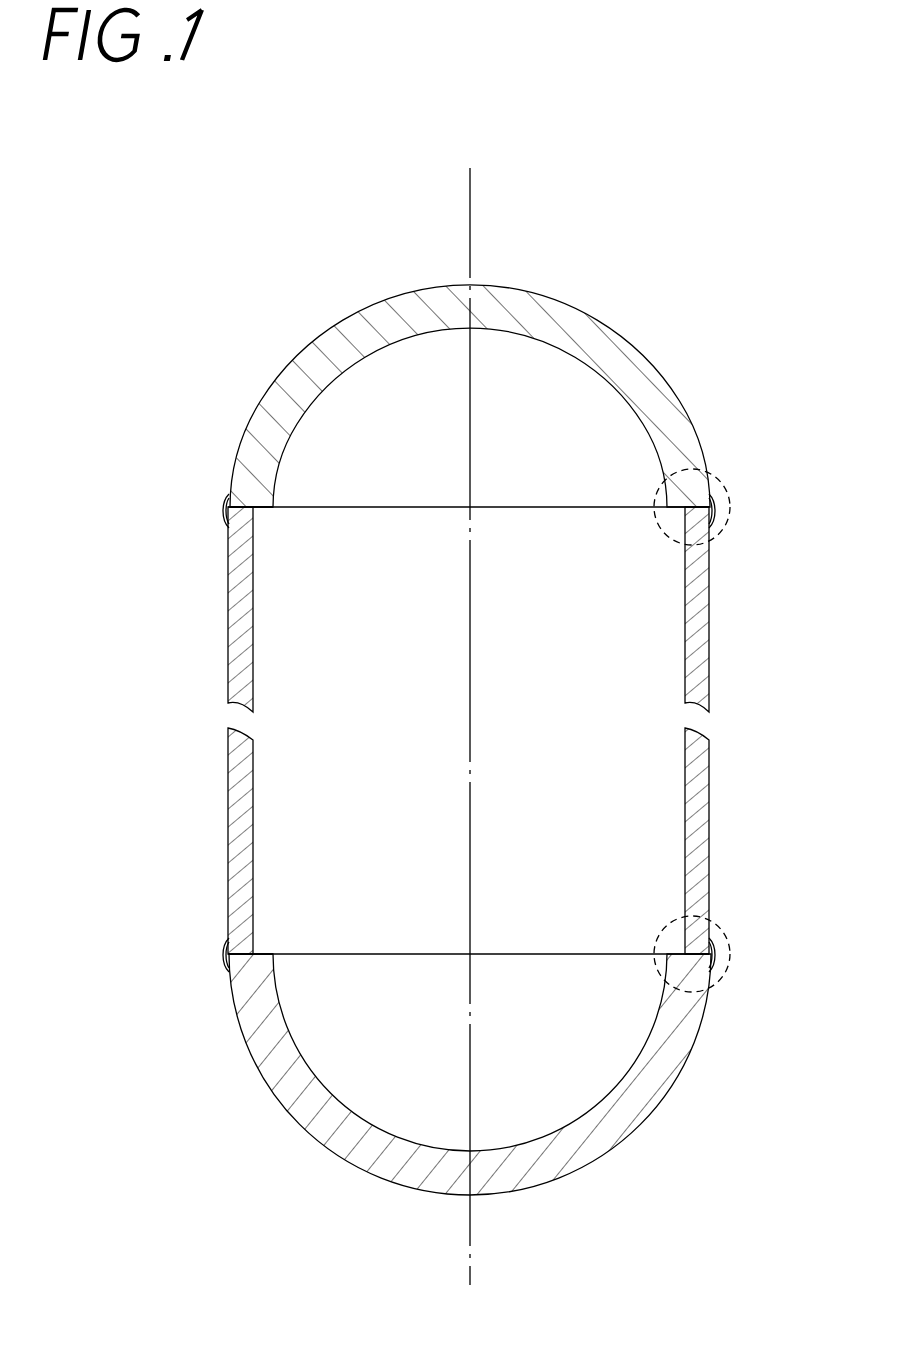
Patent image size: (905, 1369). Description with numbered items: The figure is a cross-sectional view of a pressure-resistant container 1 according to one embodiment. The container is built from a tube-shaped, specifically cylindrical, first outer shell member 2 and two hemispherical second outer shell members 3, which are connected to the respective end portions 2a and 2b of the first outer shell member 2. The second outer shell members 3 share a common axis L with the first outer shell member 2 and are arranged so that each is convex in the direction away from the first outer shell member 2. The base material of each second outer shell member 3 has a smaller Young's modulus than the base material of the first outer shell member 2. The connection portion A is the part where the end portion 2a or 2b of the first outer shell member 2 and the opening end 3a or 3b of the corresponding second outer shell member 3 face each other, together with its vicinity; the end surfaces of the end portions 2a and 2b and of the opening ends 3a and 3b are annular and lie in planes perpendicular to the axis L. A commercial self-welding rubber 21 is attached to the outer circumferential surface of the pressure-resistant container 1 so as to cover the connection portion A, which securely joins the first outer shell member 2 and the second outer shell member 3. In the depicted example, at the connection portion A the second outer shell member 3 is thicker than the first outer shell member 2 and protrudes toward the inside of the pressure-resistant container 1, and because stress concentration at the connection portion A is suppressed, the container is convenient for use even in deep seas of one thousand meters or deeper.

The pressure-resistant container 1 is at (367, 158).
The first outer shell member 2 is at (712, 596).
The end portion of the first outer shell member 2a is at (715, 519).
The end portion of the first outer shell member 2b is at (244, 934).
The second outer shell member 3 is at (650, 402).
The opening end of the second outer shell member 3a is at (246, 492).
The opening end of the second outer shell member 3b is at (243, 973).
The self-welding rubber 21 is at (226, 514).
The connection portion A is at (728, 503).
The axis L is at (471, 179).